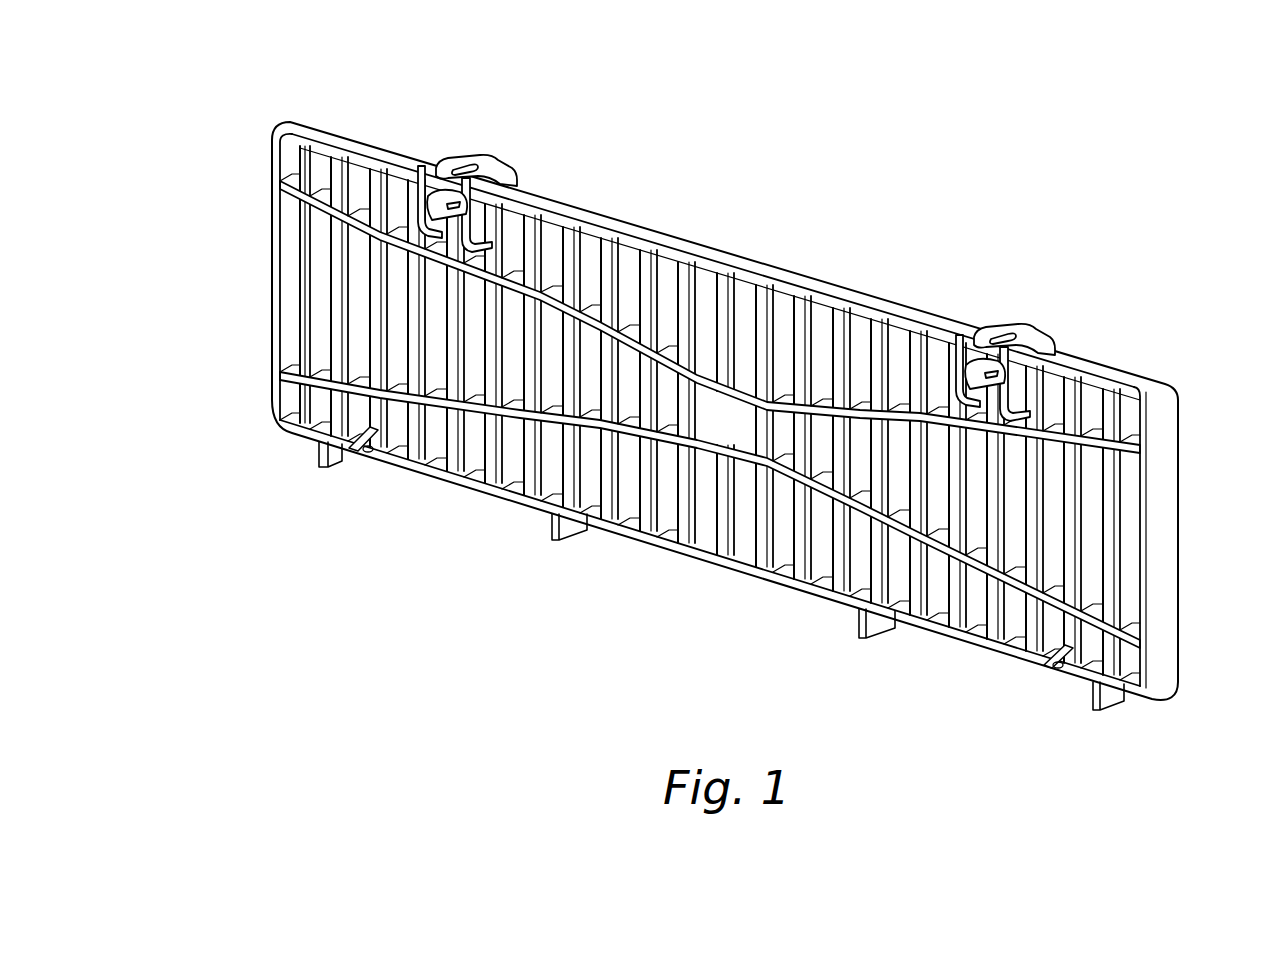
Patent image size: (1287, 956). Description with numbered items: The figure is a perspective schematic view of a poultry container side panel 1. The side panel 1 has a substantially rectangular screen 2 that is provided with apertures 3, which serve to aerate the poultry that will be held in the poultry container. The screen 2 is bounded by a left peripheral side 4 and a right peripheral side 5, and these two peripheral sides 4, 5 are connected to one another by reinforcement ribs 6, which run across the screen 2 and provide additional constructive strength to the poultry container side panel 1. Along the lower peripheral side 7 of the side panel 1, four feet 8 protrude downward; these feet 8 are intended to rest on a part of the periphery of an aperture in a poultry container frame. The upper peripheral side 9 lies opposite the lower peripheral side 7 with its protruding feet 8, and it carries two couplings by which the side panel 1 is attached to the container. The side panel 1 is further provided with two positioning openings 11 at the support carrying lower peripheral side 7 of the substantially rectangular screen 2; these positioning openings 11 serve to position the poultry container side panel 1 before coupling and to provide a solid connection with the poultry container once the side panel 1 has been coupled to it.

The poultry container side panel 1 is at (205, 112).
The substantially rectangular screen 2 is at (702, 584).
The apertures 3 is at (677, 300).
The left peripheral side 4 is at (262, 272).
The right peripheral side 5 is at (1170, 545).
The reinforcement ribs 6 is at (558, 300).
The lower peripheral side 7 is at (463, 485).
The feet 8 is at (319, 455).
The upper peripheral side 9 is at (760, 272).
The positioning openings 11 is at (368, 452).